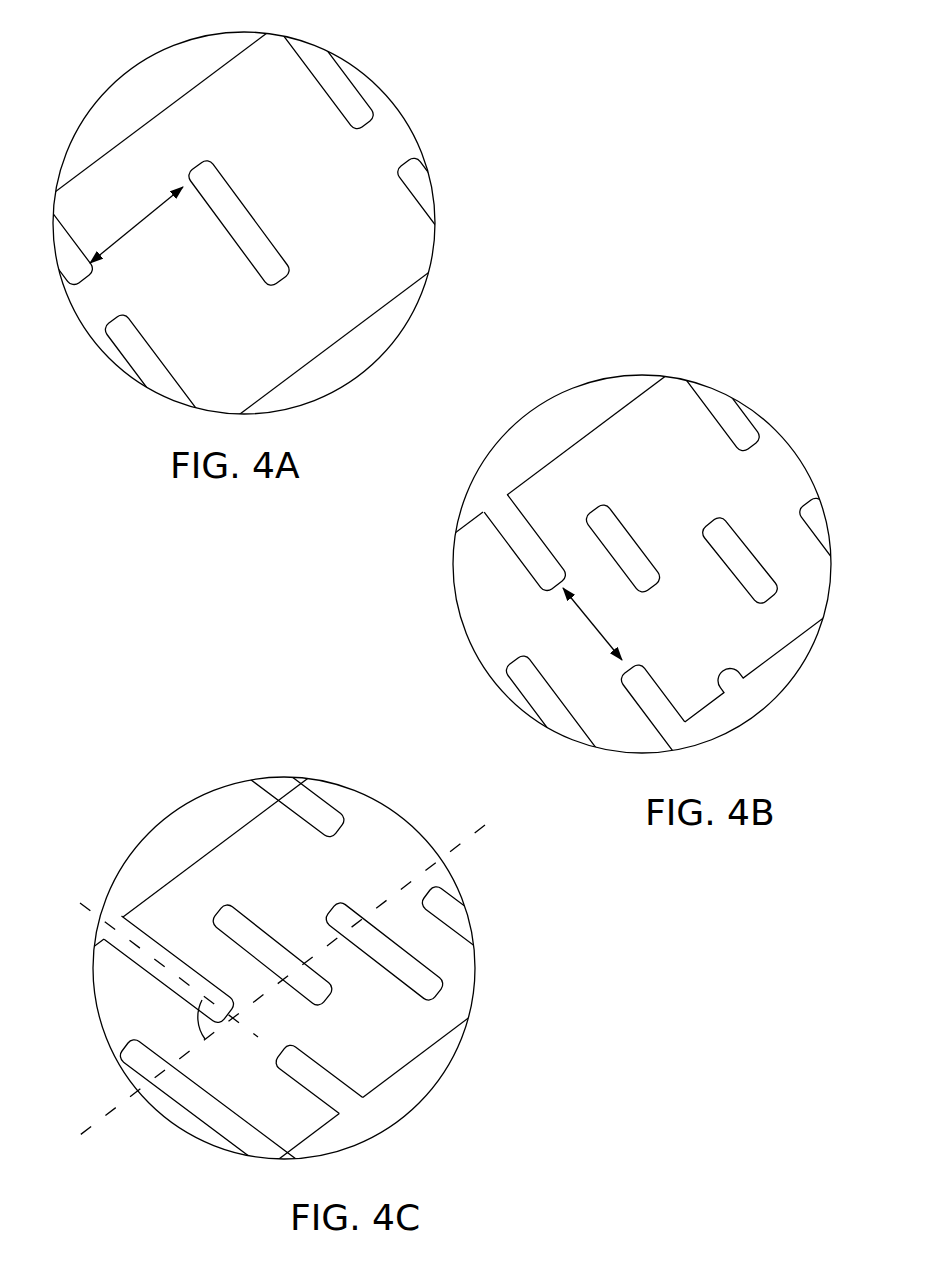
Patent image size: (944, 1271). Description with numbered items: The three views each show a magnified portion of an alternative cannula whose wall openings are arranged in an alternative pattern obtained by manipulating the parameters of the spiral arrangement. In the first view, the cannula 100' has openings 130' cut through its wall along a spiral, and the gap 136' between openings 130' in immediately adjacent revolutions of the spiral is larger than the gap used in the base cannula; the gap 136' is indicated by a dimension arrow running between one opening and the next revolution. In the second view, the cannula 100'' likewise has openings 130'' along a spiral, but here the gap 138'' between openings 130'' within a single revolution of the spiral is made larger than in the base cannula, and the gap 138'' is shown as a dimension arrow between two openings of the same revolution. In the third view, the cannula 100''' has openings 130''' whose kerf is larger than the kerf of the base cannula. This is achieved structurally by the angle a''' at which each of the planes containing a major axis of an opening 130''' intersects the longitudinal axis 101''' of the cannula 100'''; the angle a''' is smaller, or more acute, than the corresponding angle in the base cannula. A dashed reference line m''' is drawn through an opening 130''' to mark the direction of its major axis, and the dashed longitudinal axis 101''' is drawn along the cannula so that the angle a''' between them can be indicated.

In FIG. 4A, the cannula 100' is at (235, 221).
In FIG. 4A, the openings 130' is at (244, 224).
In FIG. 4A, the gap 136' is at (157, 236).
In FIG. 4B, the cannula 100'' is at (640, 517).
In FIG. 4B, the openings 130'' is at (689, 558).
In FIG. 4B, the gap 138'' is at (500, 638).
In FIG. 4C, the cannula 100''' is at (293, 946).
In FIG. 4C, the openings 130''' is at (333, 964).
In FIG. 4C, the slot axis line m''' is at (161, 931).
In FIG. 4C, the longitudinal axis 101''' is at (333, 980).
In FIG. 4C, the angle a''' is at (117, 1039).